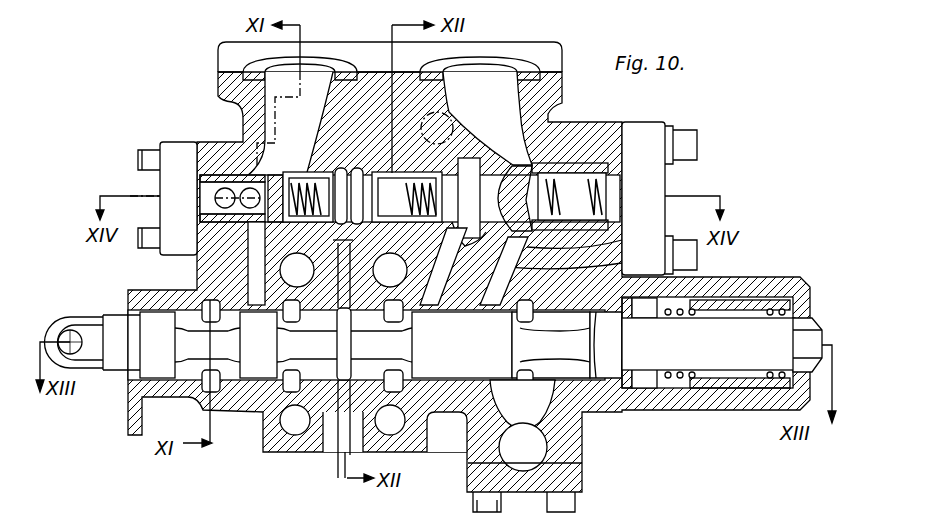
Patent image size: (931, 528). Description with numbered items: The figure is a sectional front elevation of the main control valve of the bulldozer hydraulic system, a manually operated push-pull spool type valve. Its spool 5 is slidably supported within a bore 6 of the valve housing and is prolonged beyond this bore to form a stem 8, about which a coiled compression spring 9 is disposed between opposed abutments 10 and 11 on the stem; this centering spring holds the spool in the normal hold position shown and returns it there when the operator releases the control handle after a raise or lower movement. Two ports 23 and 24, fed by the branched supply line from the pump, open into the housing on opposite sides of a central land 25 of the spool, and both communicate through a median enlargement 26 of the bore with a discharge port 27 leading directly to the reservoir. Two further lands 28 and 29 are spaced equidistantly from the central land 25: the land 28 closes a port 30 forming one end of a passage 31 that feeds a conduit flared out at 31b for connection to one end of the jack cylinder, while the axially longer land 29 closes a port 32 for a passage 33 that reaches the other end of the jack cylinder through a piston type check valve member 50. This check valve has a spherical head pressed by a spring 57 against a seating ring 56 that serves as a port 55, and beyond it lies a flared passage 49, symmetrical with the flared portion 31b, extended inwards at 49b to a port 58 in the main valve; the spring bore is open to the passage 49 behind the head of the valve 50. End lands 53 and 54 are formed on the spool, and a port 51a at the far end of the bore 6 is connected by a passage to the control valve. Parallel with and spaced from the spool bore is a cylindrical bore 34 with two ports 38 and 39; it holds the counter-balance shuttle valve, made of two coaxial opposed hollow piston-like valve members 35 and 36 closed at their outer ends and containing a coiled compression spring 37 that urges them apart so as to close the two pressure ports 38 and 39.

The spool 5 is at (382, 344).
The bore 6 is at (582, 397).
The stem 8 is at (665, 353).
The coiled compression spring 9 is at (763, 378).
The abutment 10 is at (623, 313).
The abutment 11 is at (791, 299).
The port 23 is at (256, 404).
The port 24 is at (397, 383).
The central land 25 is at (336, 395).
The median enlargement 26 is at (355, 302).
The discharge port 27 is at (343, 420).
The land 28 is at (266, 355).
The land 29 is at (500, 372).
The port 30 is at (250, 300).
The passage 31 is at (252, 163).
The flared conduit portion 31b is at (337, 88).
The port 32 is at (443, 267).
The passage 33 is at (469, 205).
The cylindrical bore 34 is at (355, 168).
The hollow piston-like valve member 35 is at (333, 170).
The hollow piston-like valve member 36 is at (403, 176).
The coiled compression spring 37 is at (407, 197).
The port 38 is at (292, 172).
The port 39 is at (441, 114).
The flared passage 49 is at (490, 107).
The inward extension of passage 49b is at (662, 270).
The piston type check valve member 50 is at (533, 196).
The port 51a is at (527, 312).
The end land 53 is at (166, 355).
The end land 54 is at (613, 403).
The port 55 is at (622, 240).
The seating ring 56 is at (502, 165).
The spring 57 is at (554, 174).
The port 58 is at (503, 272).